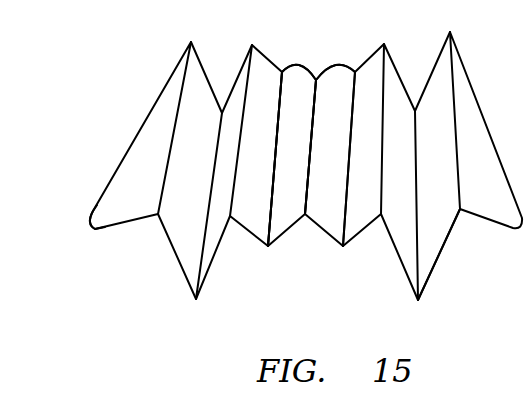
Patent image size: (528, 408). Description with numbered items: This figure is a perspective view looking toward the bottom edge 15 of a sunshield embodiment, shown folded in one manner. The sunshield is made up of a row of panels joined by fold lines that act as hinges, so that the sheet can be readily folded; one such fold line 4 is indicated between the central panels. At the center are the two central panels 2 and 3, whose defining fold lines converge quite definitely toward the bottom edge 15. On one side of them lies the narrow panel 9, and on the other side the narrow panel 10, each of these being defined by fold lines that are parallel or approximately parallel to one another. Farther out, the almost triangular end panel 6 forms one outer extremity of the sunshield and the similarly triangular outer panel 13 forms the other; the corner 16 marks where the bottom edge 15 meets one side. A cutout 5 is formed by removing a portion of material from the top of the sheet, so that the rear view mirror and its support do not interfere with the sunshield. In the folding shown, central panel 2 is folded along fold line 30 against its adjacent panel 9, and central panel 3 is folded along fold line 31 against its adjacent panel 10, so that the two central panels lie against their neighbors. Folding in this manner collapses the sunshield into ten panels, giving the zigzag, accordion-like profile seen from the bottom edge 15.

The panel 10 is at (140, 92).
The cutout 5 is at (317, 62).
The fold line 4 is at (312, 128).
The end panel 6 is at (126, 201).
The panel 9 is at (246, 185).
The central panel 2 is at (285, 179).
The central panel 3 is at (323, 182).
The outer panel 13 is at (472, 199).
The corner 16 is at (86, 224).
The bottom edge 15 is at (445, 245).
The fold line 30 is at (265, 227).
The fold line 31 is at (347, 169).